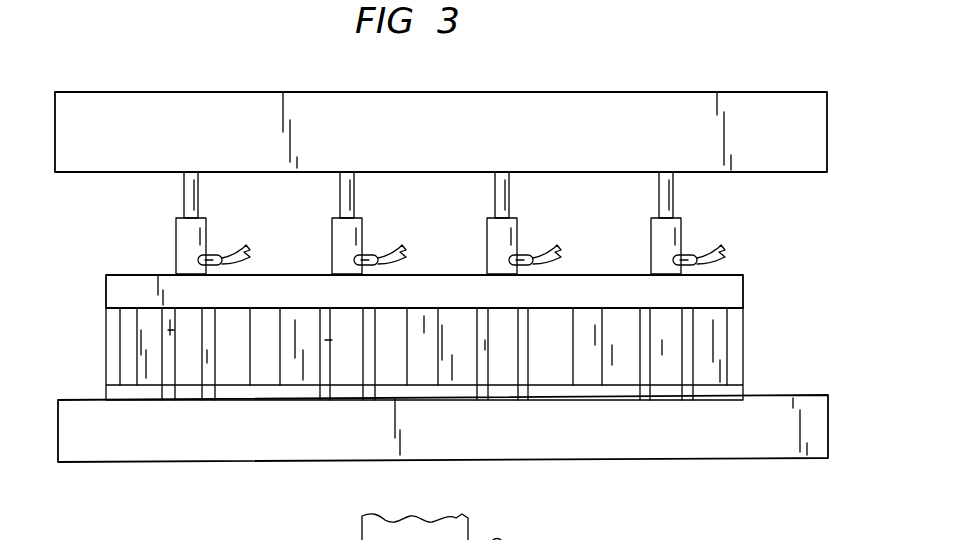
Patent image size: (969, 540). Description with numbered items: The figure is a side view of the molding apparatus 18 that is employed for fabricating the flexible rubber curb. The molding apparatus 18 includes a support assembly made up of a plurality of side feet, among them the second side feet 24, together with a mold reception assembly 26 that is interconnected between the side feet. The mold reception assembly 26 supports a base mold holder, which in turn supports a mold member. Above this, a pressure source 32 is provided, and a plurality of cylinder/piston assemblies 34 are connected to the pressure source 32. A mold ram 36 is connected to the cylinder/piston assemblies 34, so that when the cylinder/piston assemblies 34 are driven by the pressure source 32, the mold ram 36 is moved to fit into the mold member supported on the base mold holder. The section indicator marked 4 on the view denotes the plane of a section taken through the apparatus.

The molding apparatus 18 is at (556, 86).
The pressure source 32 is at (211, 140).
The cylinder/piston assemblies 34 is at (207, 218).
The mold ram 36 is at (718, 288).
The second side feet 24 is at (745, 350).
The mold reception assembly 26 is at (295, 440).
The section line 4- 4 is at (158, 198).